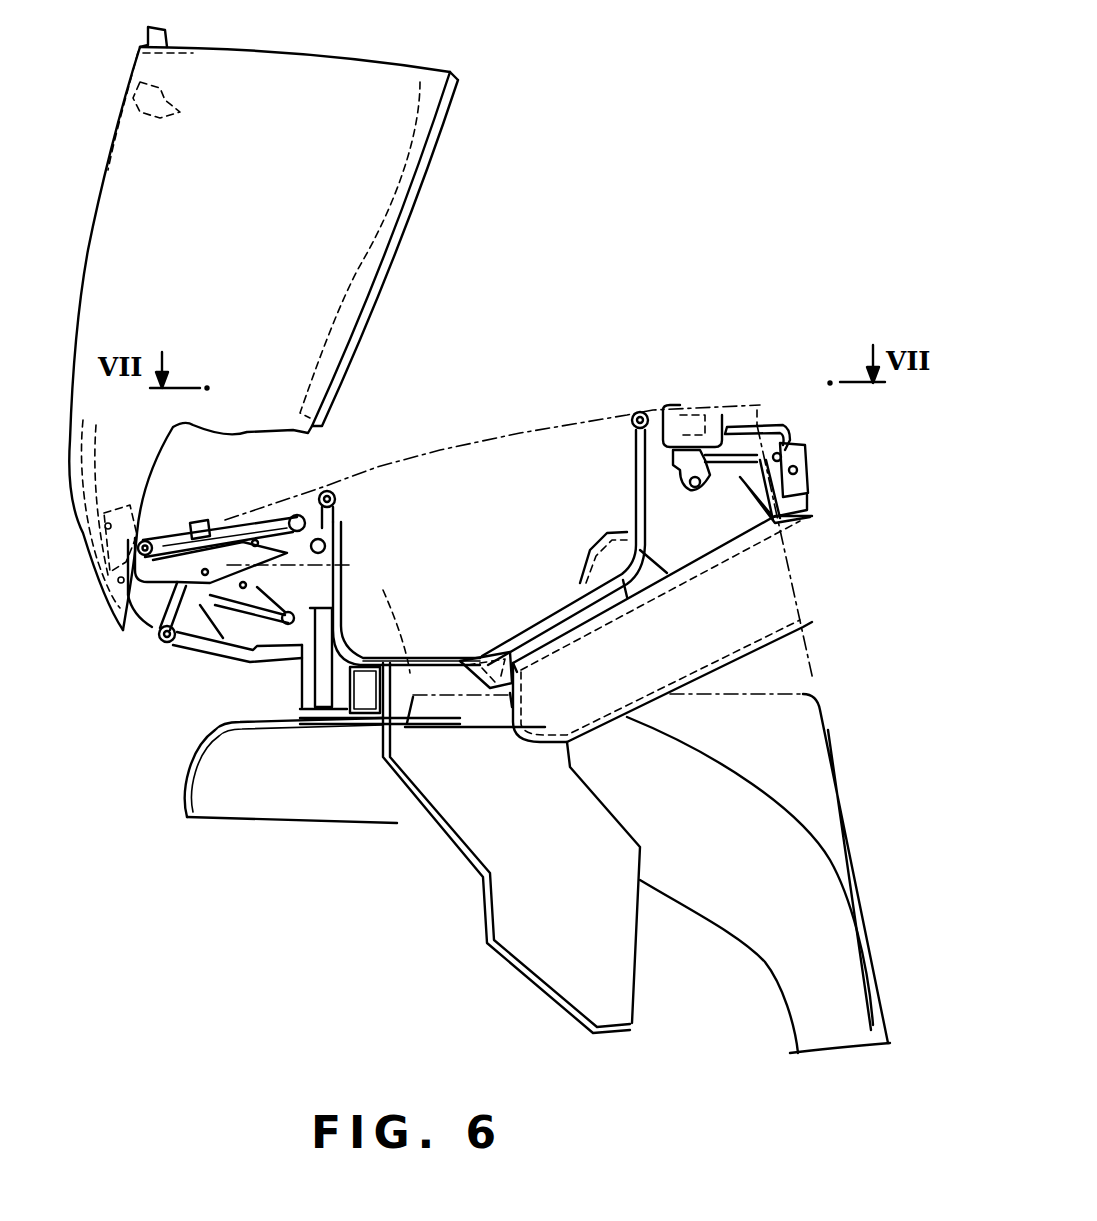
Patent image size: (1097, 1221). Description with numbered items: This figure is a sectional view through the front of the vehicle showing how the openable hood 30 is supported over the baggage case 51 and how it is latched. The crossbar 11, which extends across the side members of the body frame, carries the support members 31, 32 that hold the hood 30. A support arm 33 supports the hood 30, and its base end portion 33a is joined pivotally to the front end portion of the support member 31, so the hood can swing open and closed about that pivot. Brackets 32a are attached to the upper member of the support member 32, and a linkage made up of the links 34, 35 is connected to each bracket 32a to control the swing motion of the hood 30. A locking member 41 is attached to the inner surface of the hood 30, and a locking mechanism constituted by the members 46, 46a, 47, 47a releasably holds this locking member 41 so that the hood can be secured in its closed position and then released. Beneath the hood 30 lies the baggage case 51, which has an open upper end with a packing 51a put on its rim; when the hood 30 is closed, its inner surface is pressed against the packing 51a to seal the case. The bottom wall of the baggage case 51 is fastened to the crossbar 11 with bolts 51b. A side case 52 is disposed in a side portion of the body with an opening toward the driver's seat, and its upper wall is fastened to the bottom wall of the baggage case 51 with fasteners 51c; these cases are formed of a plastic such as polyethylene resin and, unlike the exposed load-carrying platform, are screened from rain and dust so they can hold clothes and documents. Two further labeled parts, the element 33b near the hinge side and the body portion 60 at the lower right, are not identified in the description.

The crossbar 11 is at (357, 722).
The hood 30 is at (333, 357).
The support member 31 is at (217, 653).
The support member 32 is at (302, 690).
The bracket 32a is at (315, 533).
The support arm 33 is at (140, 633).
The base end portion 33a is at (160, 637).
The hinge bracket 33b is at (130, 512).
The link 34 is at (170, 527).
The link 35 is at (263, 522).
The locking member 41 is at (183, 113).
The locking mechanism member 46 is at (693, 478).
The locking mechanism member 46a is at (662, 443).
The locking mechanism member 47 is at (797, 480).
The locking mechanism member 47a is at (725, 427).
The baggage case 51 is at (633, 477).
The packing 51a is at (638, 418).
The bolt 51b is at (367, 658).
The fastener 51c is at (620, 533).
The side case 52 is at (740, 535).
The body cover 60 is at (767, 973).